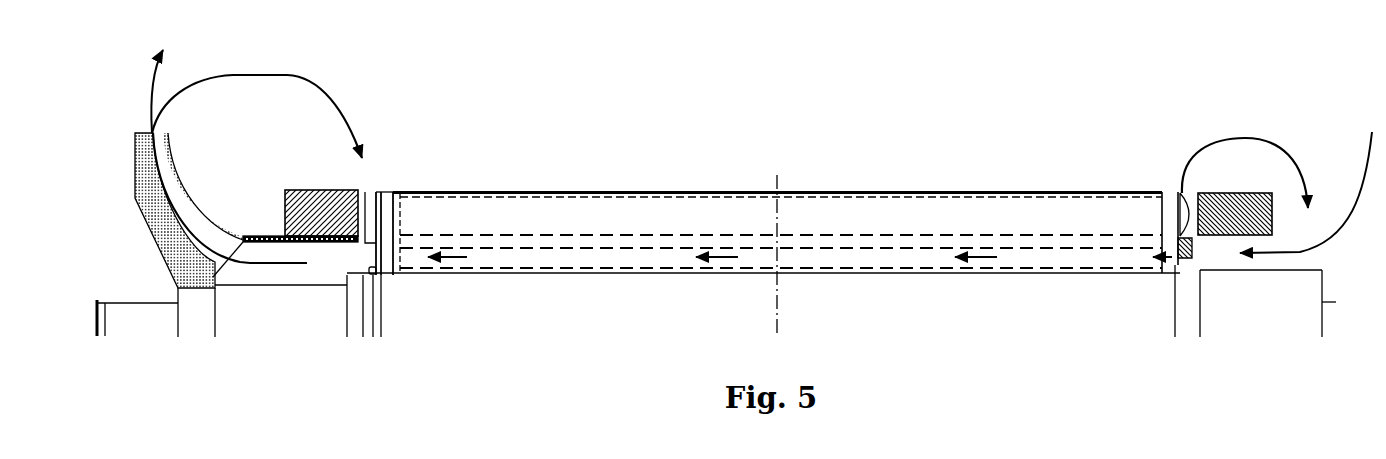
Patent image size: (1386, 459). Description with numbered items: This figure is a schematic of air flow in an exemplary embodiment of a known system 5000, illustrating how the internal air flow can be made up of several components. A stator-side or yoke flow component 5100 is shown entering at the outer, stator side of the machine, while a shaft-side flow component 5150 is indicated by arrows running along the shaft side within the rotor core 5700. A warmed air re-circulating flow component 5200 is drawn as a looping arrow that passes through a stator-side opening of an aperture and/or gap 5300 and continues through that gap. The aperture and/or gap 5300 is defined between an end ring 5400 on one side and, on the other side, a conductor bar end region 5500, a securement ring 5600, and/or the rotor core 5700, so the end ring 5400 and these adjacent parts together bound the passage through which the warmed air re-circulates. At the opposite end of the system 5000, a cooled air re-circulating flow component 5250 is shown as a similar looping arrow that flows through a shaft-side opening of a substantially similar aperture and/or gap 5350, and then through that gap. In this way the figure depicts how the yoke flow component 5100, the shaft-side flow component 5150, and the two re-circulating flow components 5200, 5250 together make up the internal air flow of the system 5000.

The system 5000 is at (753, 77).
The stator-side or yoke flow component 5100 is at (759, 130).
The shaft-side flow component 5150 is at (454, 267).
The warmed air re-circulating flow component 5200 is at (272, 111).
The cooled air re-circulating flow component 5250 is at (1245, 169).
The aperture and/or gap 5300 is at (358, 243).
The aperture and/or gap 5350 is at (1199, 244).
The end ring 5400 is at (301, 189).
The conductor bar end region 5500 is at (367, 193).
The securement ring 5600 is at (386, 207).
The rotor core 5700 is at (408, 217).